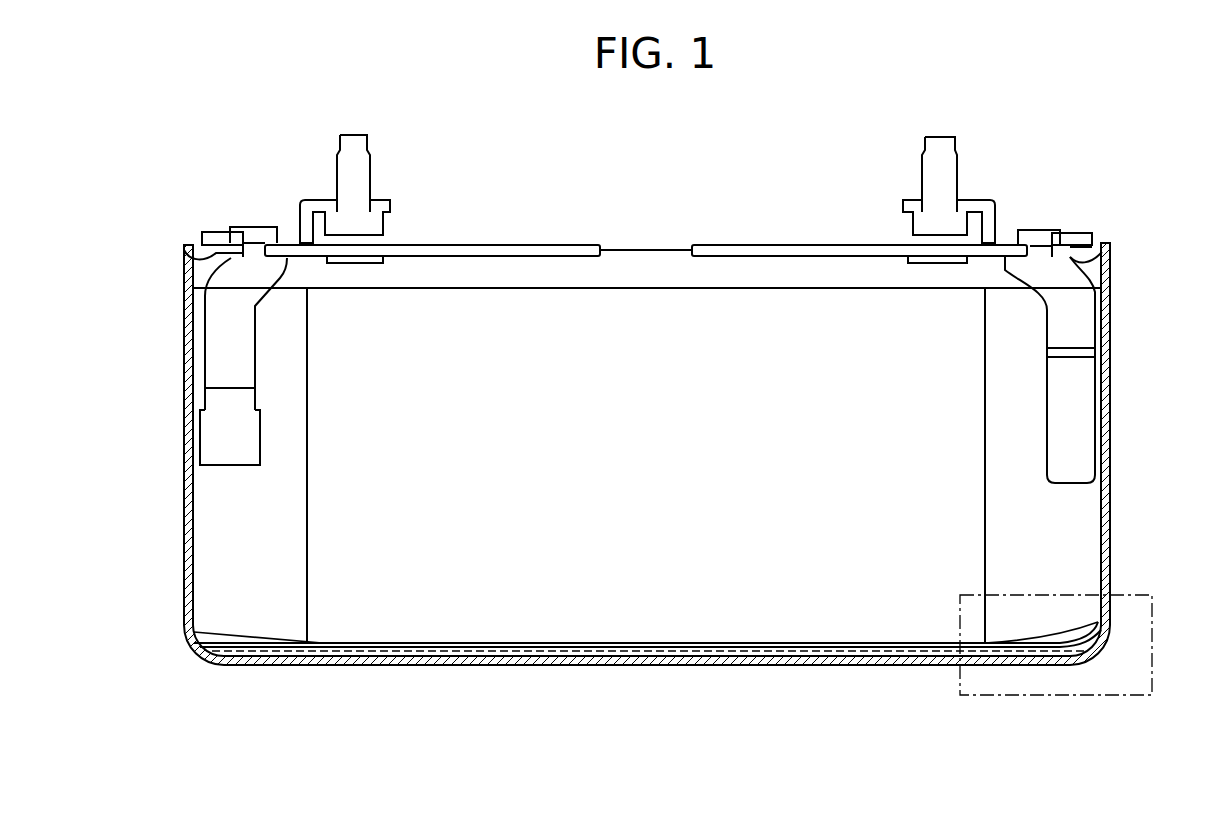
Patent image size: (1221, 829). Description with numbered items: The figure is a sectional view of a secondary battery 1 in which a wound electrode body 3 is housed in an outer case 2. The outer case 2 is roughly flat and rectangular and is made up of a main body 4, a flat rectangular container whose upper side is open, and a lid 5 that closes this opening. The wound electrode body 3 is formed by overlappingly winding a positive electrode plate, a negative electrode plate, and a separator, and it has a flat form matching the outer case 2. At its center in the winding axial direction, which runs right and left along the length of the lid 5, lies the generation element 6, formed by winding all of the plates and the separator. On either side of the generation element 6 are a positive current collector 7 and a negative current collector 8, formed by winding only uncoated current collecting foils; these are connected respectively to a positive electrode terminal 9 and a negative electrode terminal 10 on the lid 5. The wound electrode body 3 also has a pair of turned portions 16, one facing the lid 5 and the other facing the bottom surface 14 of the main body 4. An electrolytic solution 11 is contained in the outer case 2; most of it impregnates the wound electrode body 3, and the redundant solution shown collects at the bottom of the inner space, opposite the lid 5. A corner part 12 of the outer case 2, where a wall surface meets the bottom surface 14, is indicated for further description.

The secondary battery 1 is at (1053, 142).
The outer case 2 is at (683, 446).
The wound electrode body 3 is at (647, 510).
The main body 4 is at (1110, 304).
The lid 5 is at (666, 249).
The generation element 6 is at (623, 565).
The positive current collector 7 is at (265, 565).
The negative current collector 8 is at (1022, 520).
The positive electrode terminal 9 is at (358, 145).
The negative electrode terminal 10 is at (930, 146).
The electrolytic solution 11 is at (870, 668).
The corner part 12 is at (1028, 696).
The bottom surface 14 is at (788, 666).
The turned portions 16 is at (478, 289).